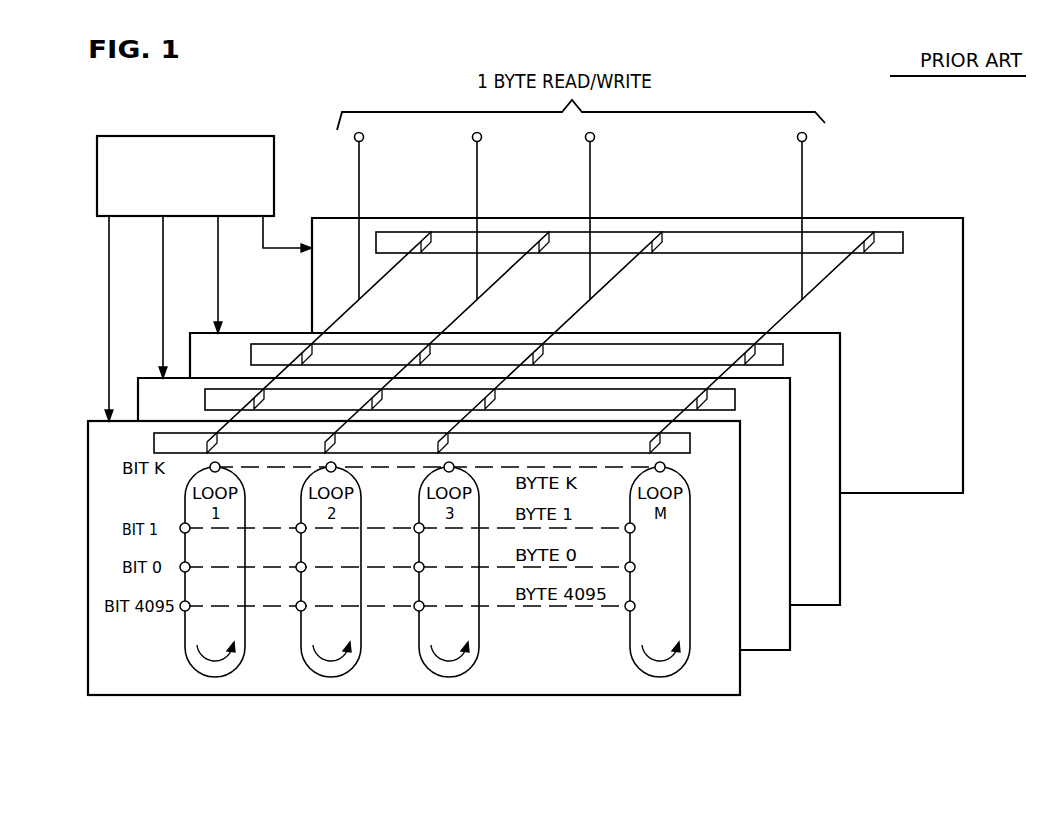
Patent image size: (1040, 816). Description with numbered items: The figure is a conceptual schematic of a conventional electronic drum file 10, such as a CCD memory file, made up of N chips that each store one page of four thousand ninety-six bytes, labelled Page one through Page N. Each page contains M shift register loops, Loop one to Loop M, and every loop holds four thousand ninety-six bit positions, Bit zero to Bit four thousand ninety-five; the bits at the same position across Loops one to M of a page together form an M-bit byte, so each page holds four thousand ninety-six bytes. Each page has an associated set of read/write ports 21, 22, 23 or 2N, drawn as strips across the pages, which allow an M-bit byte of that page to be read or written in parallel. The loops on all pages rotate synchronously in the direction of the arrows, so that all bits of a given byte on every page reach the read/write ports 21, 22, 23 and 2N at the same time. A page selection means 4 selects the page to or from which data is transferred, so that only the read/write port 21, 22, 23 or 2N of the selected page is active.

The page selection means 4 is at (240, 142).
The electronic drum file 10 is at (730, 725).
The read/write port 21 is at (518, 438).
The read/write port 22 is at (595, 392).
The read/write port 23 is at (658, 350).
The read/write port 2N is at (732, 253).